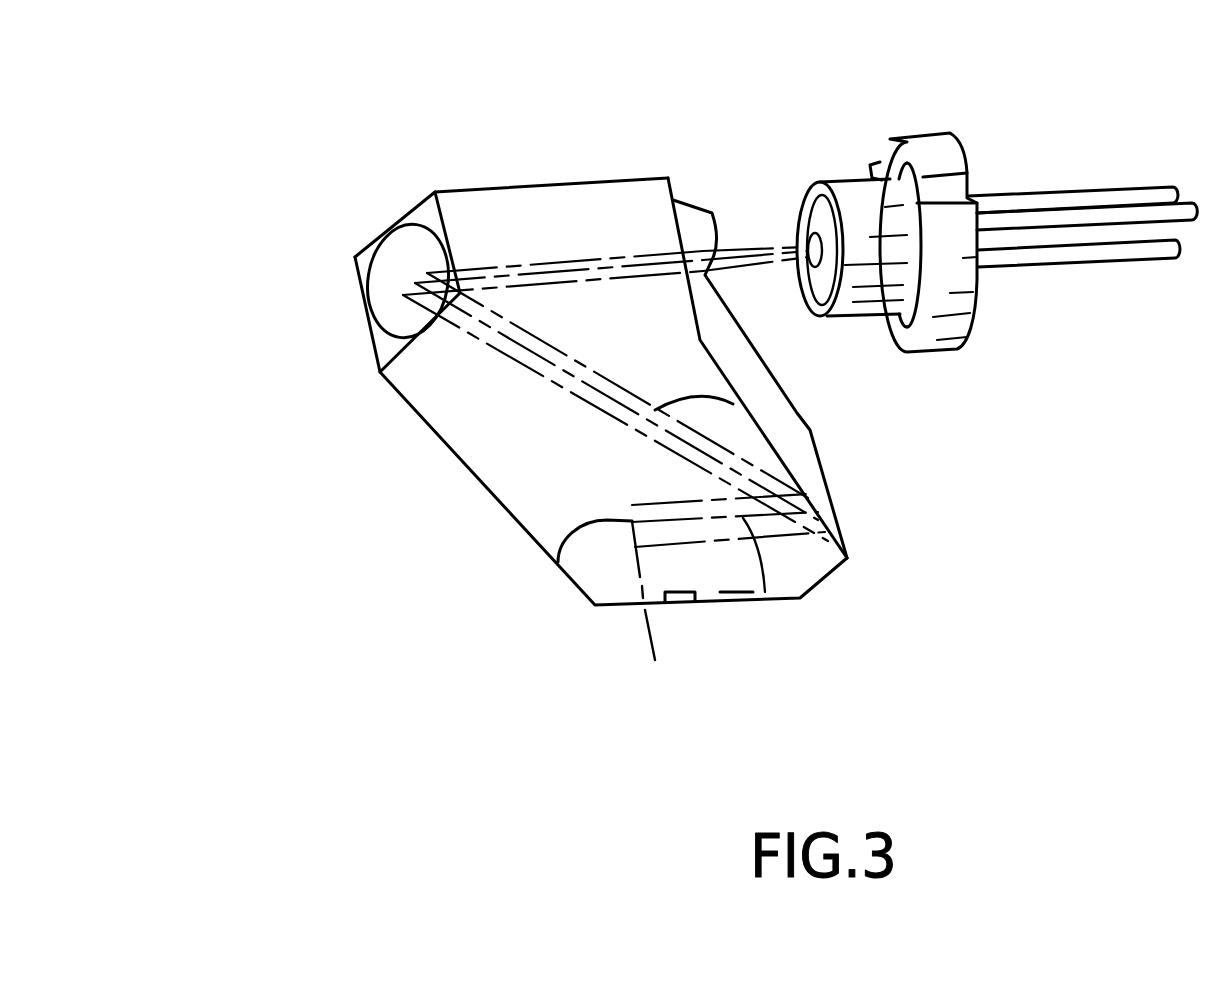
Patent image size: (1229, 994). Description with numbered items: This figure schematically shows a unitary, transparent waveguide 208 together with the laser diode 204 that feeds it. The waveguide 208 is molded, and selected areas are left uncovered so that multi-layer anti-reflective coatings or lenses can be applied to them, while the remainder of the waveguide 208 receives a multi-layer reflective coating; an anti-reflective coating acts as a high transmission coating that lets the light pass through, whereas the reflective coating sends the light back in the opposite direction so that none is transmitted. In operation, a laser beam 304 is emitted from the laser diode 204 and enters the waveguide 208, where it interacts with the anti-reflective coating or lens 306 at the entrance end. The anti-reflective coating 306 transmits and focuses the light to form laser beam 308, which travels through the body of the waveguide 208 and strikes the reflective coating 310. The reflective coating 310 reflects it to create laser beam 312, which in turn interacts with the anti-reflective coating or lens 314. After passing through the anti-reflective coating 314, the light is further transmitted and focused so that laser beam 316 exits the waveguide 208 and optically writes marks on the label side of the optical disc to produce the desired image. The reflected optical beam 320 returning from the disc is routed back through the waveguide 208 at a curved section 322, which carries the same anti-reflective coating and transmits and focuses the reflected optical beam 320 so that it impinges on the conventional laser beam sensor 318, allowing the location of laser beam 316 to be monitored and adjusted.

The waveguide 208 is at (290, 290).
The anti-reflective coating or lens 306 is at (403, 227).
The laser beam 304 is at (755, 227).
The laser diode 204 is at (960, 327).
The laser beam 308 is at (748, 411).
The reflective coating 310 is at (805, 508).
The laser beam sensor 318 is at (966, 577).
The anti-reflective coating or lens 314 is at (547, 563).
The laser beam 316 is at (643, 613).
The laser beam 312 is at (762, 602).
The reflected optical beam 320 is at (745, 593).
The curved section 322 is at (688, 601).